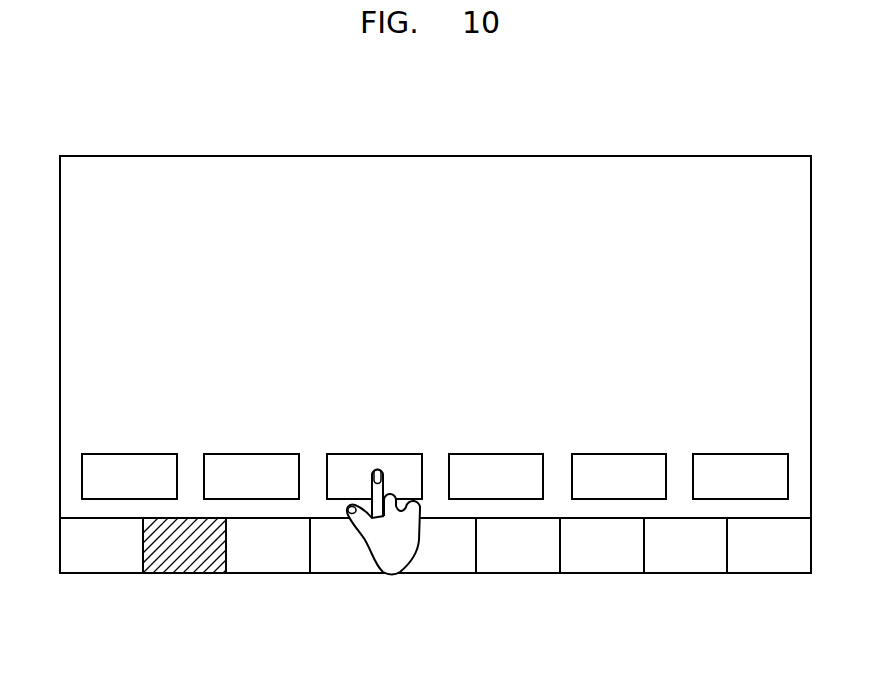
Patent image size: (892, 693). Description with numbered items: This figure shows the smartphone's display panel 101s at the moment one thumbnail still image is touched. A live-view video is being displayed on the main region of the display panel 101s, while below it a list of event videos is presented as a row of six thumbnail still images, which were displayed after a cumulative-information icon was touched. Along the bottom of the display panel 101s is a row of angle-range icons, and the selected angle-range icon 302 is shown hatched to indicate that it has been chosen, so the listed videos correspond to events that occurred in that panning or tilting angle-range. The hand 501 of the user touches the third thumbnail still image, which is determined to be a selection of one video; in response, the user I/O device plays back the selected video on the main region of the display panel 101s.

The display panel 101s is at (615, 138).
The angle-range icon 302 is at (188, 563).
The hand 501 is at (390, 568).